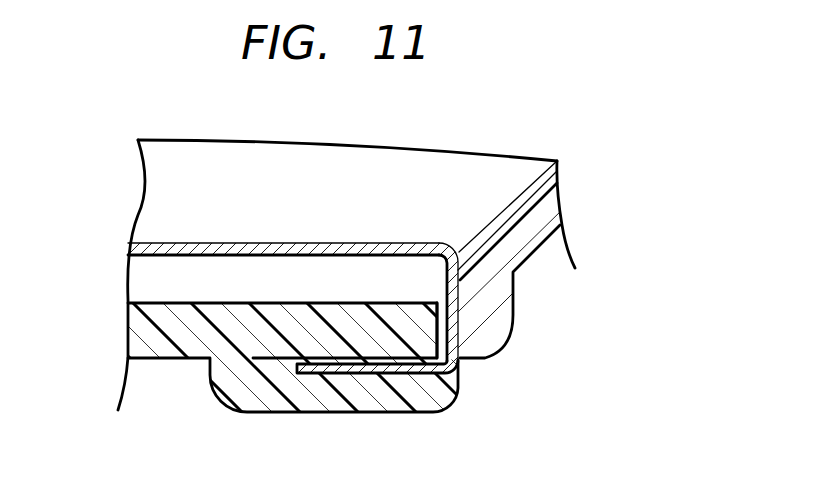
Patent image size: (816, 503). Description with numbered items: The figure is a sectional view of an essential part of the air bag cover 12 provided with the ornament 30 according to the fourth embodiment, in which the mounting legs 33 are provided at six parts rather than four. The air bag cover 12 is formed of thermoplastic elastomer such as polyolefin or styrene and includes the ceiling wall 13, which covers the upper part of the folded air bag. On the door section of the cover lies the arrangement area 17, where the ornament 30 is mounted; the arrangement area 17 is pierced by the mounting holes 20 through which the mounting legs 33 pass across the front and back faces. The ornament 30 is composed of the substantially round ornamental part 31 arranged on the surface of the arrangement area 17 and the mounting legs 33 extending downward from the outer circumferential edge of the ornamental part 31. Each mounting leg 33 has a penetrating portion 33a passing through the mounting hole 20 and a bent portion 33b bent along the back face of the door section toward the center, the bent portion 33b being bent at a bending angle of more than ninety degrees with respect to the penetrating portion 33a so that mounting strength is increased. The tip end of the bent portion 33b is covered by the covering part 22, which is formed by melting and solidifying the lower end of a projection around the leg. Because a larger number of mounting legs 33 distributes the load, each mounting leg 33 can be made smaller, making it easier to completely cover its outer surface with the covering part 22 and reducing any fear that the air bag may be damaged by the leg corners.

The arrangement area 17 is at (172, 197).
The air bag cover 12 is at (380, 275).
The ceiling wall 13 is at (520, 243).
The mounting hole 20 is at (443, 310).
The covering part 22 is at (293, 337).
The ornament 30 is at (370, 294).
The ornamental part 31 is at (190, 243).
The mounting leg 33 is at (452, 367).
The penetrating portion 33a is at (462, 323).
The bent portion 33b is at (322, 377).